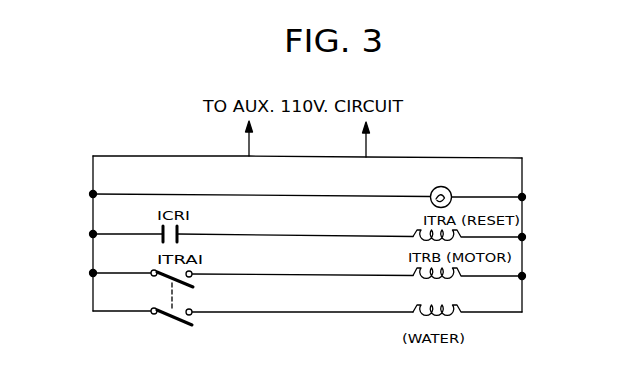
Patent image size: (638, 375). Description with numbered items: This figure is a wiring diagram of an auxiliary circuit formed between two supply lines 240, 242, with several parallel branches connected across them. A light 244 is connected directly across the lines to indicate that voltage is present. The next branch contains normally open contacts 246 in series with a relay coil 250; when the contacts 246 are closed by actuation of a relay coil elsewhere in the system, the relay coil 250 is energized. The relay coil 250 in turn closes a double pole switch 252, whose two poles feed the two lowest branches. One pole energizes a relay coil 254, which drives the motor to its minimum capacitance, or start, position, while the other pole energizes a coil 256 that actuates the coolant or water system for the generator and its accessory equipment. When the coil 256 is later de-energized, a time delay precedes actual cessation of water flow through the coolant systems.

The line 240 is at (93, 175).
The line 242 is at (522, 180).
The light 244 is at (441, 187).
The normally open contacts 246 is at (162, 228).
The relay coil 250 is at (415, 232).
The double pole switch 252 is at (172, 285).
The relay coil 254 is at (418, 282).
The coil 256 is at (450, 316).